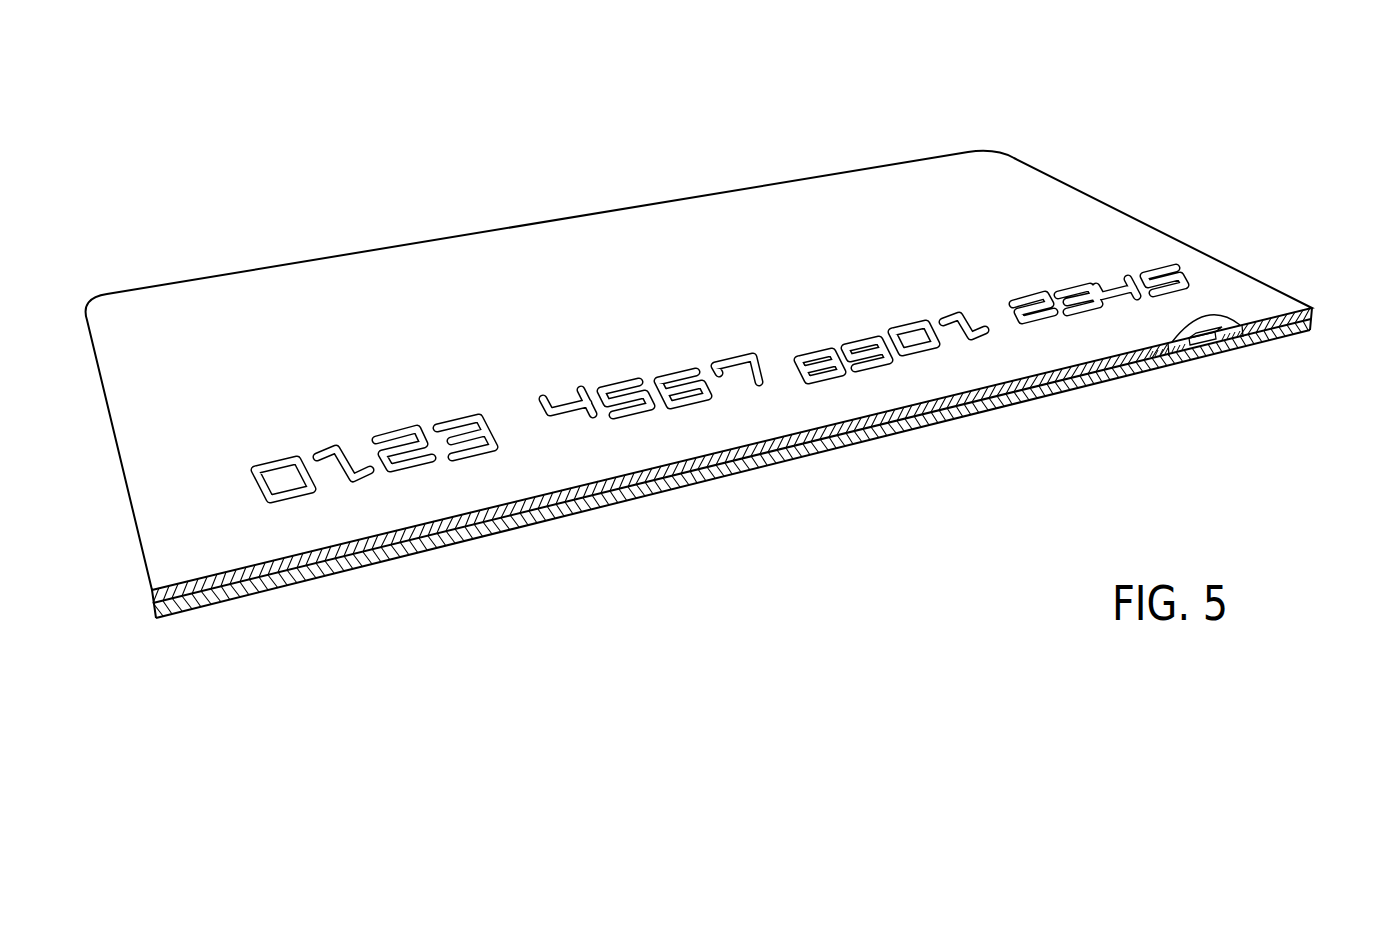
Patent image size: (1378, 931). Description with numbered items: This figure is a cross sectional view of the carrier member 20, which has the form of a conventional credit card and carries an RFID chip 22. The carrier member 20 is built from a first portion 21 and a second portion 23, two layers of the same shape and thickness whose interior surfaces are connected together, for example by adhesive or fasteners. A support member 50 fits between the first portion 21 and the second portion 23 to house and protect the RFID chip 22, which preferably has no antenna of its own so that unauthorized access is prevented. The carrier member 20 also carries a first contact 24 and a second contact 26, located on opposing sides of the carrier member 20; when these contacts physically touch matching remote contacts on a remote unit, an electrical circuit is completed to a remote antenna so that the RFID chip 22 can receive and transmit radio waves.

The carrier member 20 is at (810, 178).
The first portion 21 is at (390, 273).
The RFID chip 22 is at (1218, 350).
The second portion 23 is at (447, 547).
The first contact 24 is at (1199, 328).
The second contact 26 is at (1193, 353).
The support member 50 is at (1165, 348).